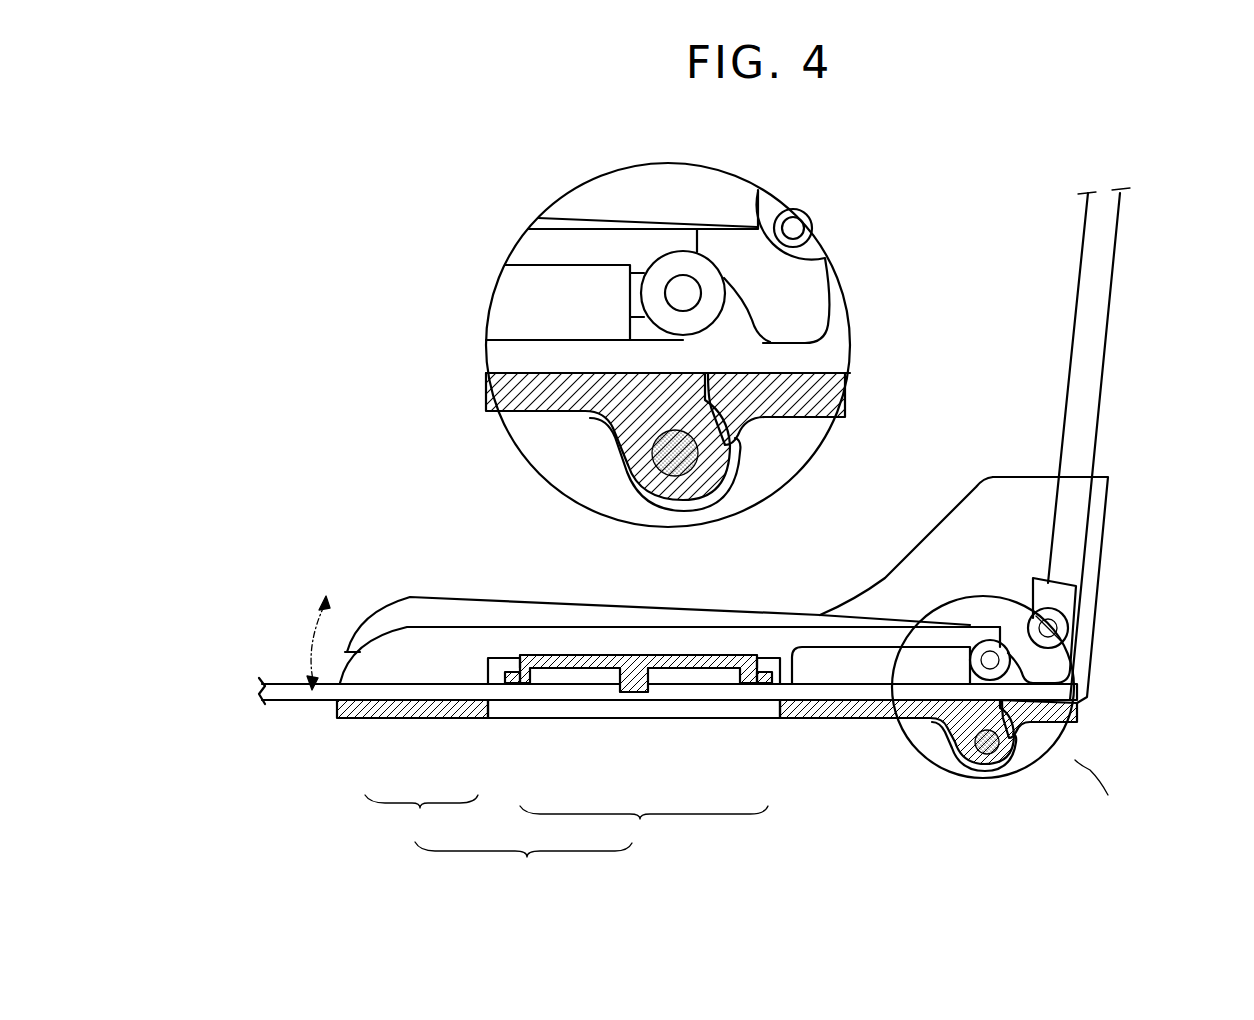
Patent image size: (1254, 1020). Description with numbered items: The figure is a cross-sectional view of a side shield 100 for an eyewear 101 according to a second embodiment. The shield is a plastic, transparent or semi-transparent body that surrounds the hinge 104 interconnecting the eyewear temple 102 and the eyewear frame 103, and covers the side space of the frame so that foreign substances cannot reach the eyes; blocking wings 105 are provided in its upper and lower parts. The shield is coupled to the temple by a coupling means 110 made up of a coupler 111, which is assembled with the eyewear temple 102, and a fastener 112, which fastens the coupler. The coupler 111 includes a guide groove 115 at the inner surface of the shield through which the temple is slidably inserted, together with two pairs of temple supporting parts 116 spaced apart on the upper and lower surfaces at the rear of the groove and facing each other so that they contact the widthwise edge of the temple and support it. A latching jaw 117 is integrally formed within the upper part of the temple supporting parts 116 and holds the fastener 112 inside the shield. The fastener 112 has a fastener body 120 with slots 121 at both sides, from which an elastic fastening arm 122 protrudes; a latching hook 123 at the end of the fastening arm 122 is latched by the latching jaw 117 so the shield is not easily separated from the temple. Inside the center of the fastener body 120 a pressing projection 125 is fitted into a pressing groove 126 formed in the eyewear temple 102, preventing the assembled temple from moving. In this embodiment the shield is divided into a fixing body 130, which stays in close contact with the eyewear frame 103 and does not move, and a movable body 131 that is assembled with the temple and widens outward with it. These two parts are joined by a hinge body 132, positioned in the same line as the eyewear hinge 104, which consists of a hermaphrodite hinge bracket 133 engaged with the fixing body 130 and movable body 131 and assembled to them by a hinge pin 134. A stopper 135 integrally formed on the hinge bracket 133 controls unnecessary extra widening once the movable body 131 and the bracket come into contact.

The side shield 100 is at (1112, 820).
The eyewear 101 is at (1118, 391).
The eyewear temple 102 is at (262, 692).
The eyewear frame 103 is at (1106, 320).
The hinge 104 is at (683, 290).
The blocking wings 105 is at (1003, 497).
The coupling means 110 is at (548, 883).
The coupler 111 is at (421, 813).
The fastener 112 is at (644, 825).
The guide groove 115 is at (422, 700).
The temple supporting parts 116 is at (492, 680).
The latching jaw 117 is at (505, 665).
The fastener body 120 is at (608, 662).
The slots 121 is at (568, 677).
The fastening arm 122 is at (730, 665).
The latching hook 123 is at (512, 678).
The pressing projection 125 is at (620, 672).
The pressing groove 126 is at (650, 693).
The fixing body 130 is at (1090, 615).
The movable body 131 is at (826, 720).
The hinge body 132 is at (983, 780).
The hinge bracket 133 is at (637, 487).
The hinge pin 134 is at (708, 497).
The stopper 135 is at (742, 445).